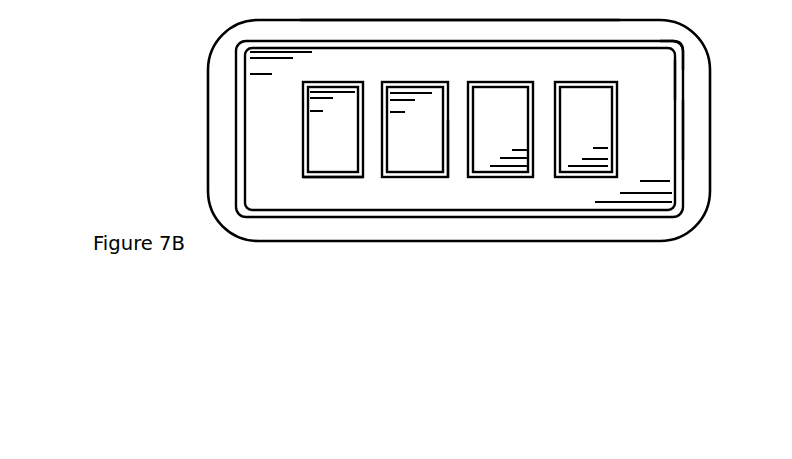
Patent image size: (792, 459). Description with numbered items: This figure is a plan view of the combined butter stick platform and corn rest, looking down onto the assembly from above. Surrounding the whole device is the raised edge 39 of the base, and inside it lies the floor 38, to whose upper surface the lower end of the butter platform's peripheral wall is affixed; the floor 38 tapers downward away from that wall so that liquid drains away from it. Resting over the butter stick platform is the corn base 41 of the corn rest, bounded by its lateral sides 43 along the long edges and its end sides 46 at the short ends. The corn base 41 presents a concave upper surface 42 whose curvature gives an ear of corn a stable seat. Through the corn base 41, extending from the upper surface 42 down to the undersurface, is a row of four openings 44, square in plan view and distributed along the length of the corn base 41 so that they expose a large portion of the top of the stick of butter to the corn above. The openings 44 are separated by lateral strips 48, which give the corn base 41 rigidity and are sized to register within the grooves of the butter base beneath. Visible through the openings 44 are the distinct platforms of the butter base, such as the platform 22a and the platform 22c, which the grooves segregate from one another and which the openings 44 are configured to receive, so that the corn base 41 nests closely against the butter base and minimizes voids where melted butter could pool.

The raised edge 39 is at (207, 77).
The floor 38 is at (238, 137).
The lateral sides 43 is at (468, 47).
The corn base 41 is at (685, 63).
The concave upper surface 42 is at (654, 80).
The end sides 46 is at (688, 128).
The distinct platform 22a is at (338, 115).
The distinct platform 22c is at (493, 105).
The openings 44 is at (358, 180).
The lateral strips 48 is at (456, 135).